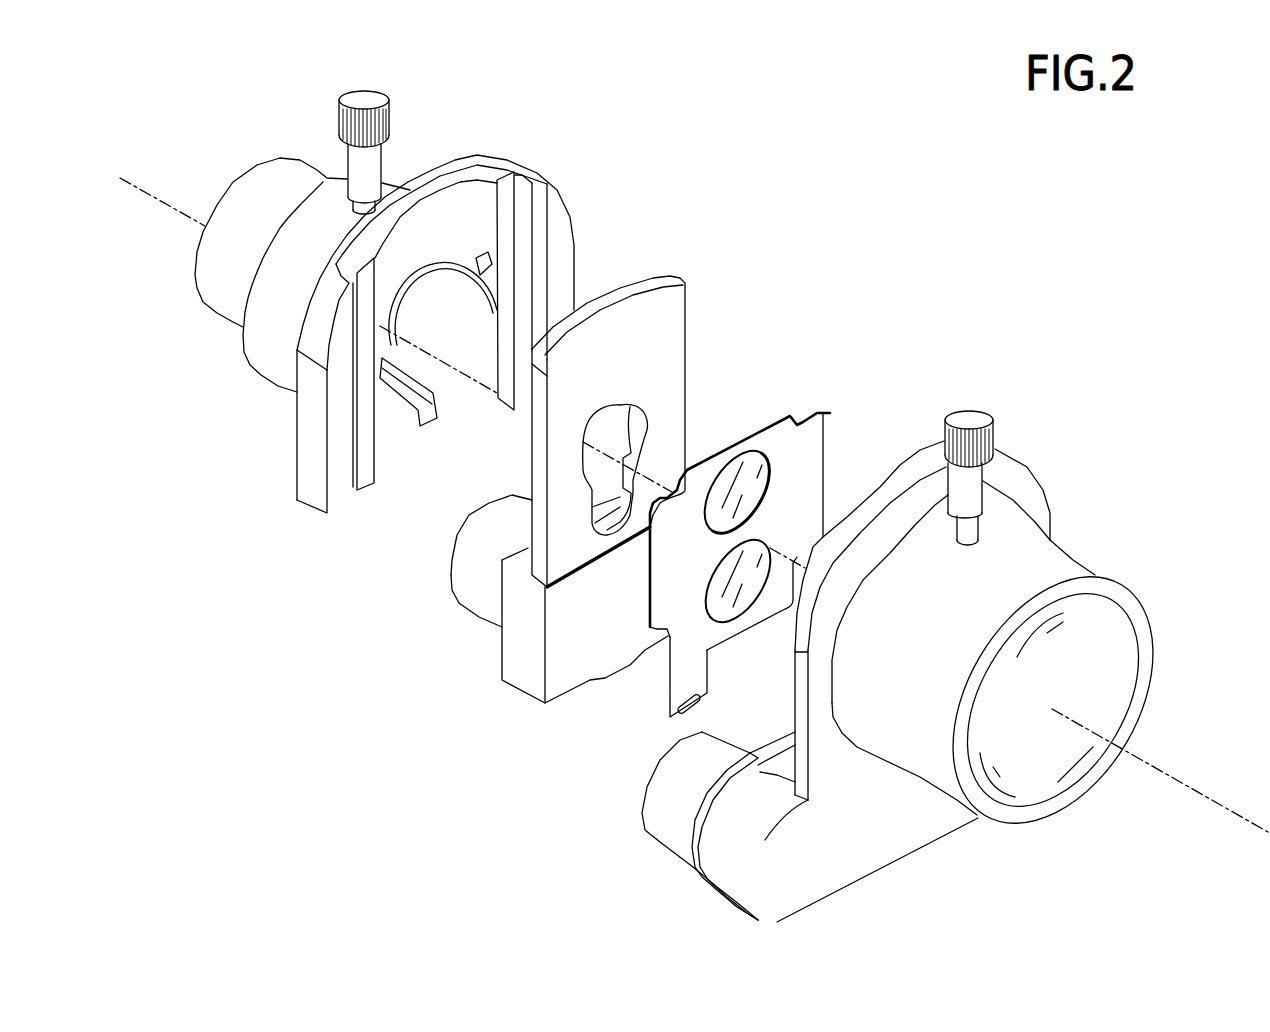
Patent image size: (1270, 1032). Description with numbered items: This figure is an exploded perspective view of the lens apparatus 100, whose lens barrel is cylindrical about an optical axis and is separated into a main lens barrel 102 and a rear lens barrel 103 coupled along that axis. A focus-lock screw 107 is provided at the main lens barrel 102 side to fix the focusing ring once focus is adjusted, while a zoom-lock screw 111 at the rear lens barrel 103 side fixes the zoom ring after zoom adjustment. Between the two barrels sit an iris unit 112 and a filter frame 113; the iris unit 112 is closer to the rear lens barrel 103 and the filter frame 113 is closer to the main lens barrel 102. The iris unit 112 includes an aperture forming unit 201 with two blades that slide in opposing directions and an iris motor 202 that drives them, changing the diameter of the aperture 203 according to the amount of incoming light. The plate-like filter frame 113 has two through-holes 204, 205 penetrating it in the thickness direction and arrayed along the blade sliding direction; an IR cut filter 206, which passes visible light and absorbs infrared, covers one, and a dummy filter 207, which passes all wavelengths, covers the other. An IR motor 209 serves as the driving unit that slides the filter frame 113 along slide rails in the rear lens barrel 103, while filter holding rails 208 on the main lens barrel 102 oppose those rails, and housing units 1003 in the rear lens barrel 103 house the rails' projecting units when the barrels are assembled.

The lens apparatus 100 is at (438, 765).
The main lens barrel 102 is at (1063, 547).
The rear lens barrel 103 is at (265, 380).
The focus-lock screw 107 is at (972, 405).
The zoom-lock screw 111 is at (368, 92).
The iris unit 112 is at (693, 307).
The filter frame 113 is at (828, 412).
The aperture forming unit 201 is at (670, 293).
The iris motor 202 is at (452, 593).
The aperture 203 is at (638, 420).
The through-hole 204 is at (752, 450).
The through-hole 205 is at (740, 624).
The IR cut filter 206 is at (765, 472).
The dummy filter 207 is at (670, 634).
The filter holding rails 208 is at (530, 200).
The IR motor 209 is at (652, 827).
The housing units 1003 is at (537, 220).